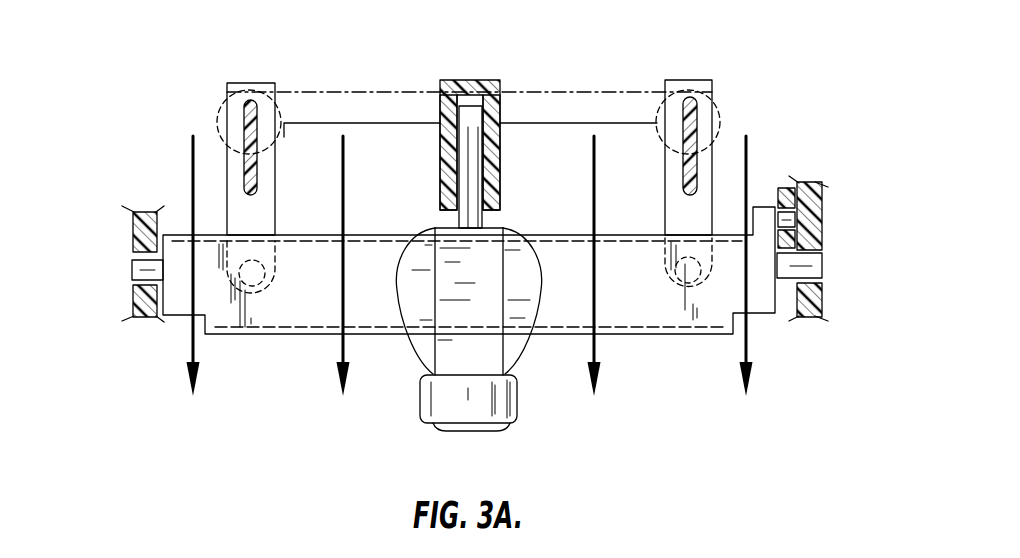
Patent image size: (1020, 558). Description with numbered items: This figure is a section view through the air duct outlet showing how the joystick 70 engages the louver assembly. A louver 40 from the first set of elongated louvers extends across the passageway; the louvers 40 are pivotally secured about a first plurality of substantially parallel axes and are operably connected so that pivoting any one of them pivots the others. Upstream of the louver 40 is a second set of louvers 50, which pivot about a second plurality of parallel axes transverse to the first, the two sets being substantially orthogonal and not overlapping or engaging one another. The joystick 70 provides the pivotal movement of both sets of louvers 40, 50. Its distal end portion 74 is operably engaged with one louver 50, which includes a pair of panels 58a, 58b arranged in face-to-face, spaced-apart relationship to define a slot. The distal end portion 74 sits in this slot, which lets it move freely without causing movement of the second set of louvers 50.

The louver 40 is at (268, 337).
The louver 50 is at (247, 82).
The panel 58a is at (440, 152).
The panel 58b is at (500, 153).
The joystick 70 is at (430, 433).
The distal end portion 74 is at (441, 117).